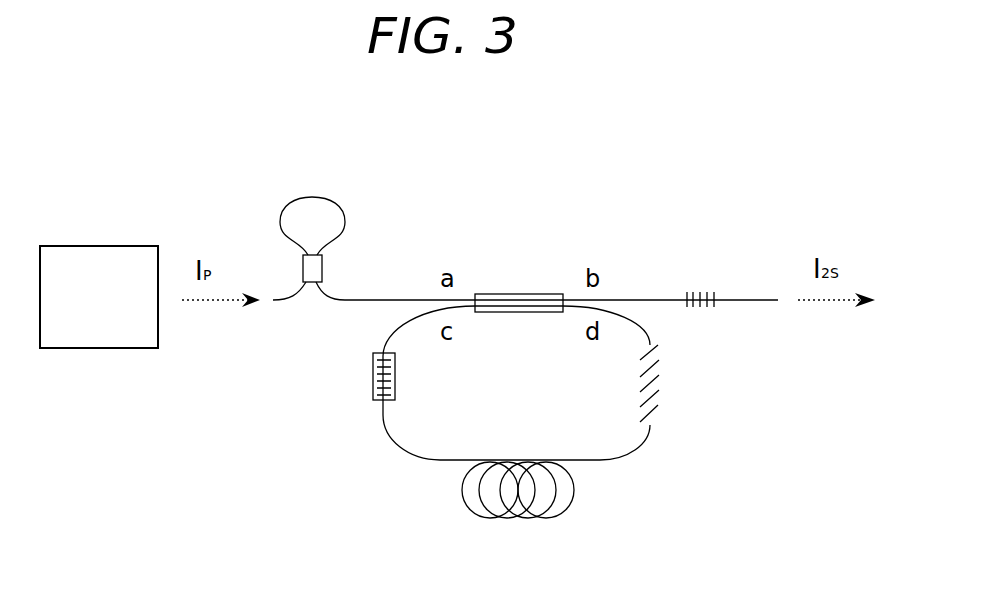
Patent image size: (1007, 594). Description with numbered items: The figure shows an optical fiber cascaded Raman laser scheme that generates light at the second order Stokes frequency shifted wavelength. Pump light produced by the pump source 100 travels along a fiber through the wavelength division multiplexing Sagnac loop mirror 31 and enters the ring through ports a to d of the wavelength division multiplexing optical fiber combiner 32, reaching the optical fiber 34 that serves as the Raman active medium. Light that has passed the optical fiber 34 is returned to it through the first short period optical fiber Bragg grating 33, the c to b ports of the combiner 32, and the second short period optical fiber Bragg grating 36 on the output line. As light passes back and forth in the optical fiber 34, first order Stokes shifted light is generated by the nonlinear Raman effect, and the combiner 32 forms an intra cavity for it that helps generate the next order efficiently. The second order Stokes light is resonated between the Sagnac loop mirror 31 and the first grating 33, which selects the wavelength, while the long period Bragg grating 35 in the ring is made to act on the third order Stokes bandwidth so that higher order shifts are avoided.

The pump source 100 is at (86, 246).
The wavelength division multiplexing Sagnac loop mirror 31 is at (312, 197).
The wavelength division multiplexing optical fiber combiner 32 is at (525, 294).
The first short period optical fiber Bragg grating 33 is at (373, 379).
The optical fiber 34 is at (575, 498).
The long period Bragg grating 35 is at (665, 382).
The second short period optical fiber Bragg grating 36 is at (703, 290).